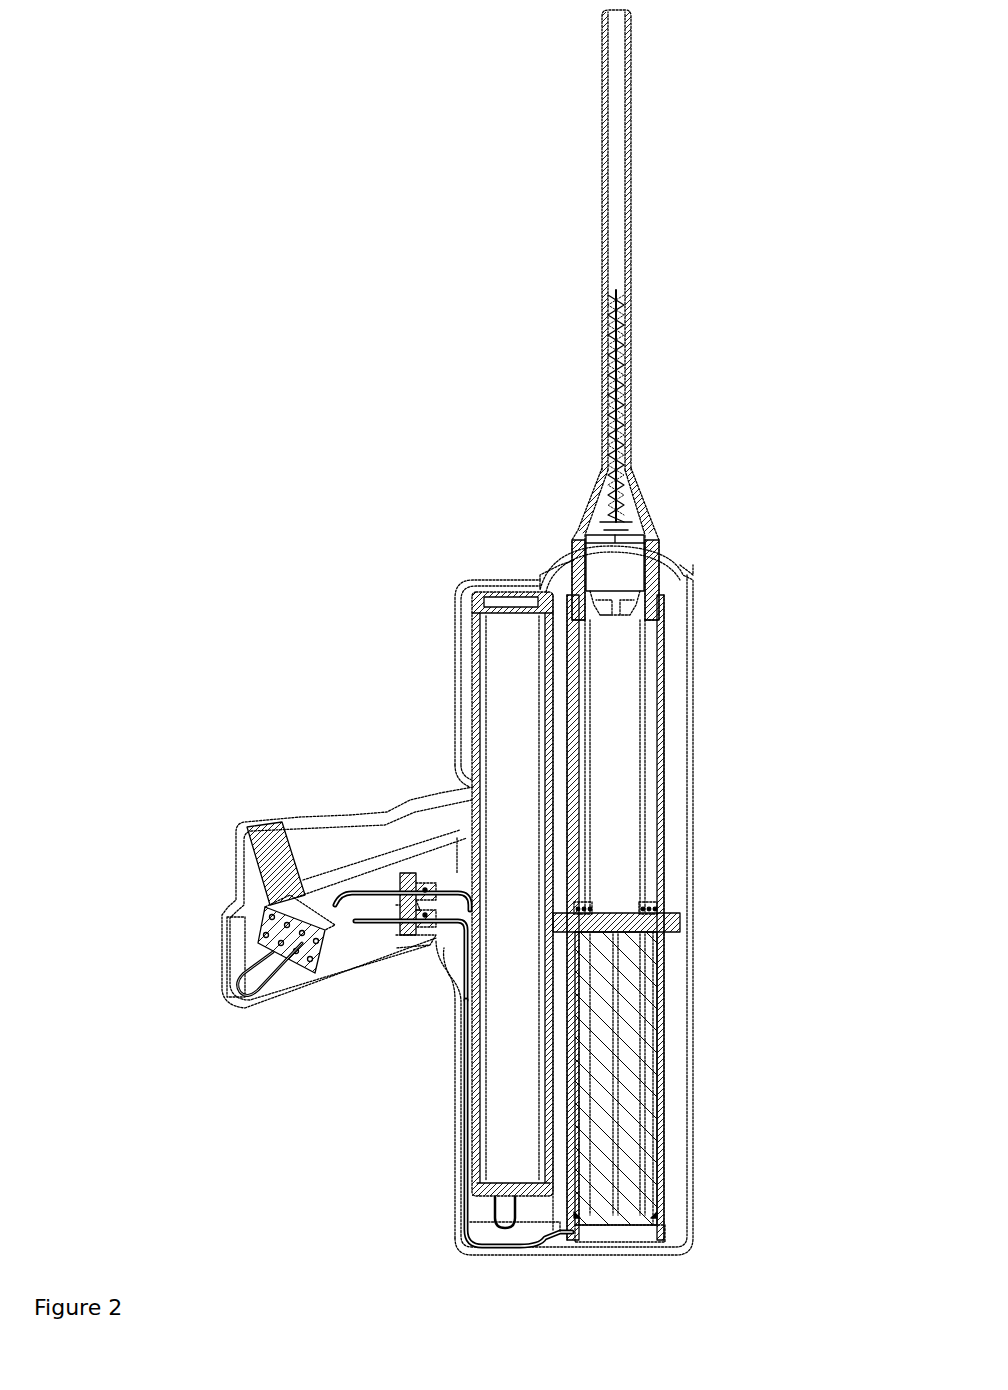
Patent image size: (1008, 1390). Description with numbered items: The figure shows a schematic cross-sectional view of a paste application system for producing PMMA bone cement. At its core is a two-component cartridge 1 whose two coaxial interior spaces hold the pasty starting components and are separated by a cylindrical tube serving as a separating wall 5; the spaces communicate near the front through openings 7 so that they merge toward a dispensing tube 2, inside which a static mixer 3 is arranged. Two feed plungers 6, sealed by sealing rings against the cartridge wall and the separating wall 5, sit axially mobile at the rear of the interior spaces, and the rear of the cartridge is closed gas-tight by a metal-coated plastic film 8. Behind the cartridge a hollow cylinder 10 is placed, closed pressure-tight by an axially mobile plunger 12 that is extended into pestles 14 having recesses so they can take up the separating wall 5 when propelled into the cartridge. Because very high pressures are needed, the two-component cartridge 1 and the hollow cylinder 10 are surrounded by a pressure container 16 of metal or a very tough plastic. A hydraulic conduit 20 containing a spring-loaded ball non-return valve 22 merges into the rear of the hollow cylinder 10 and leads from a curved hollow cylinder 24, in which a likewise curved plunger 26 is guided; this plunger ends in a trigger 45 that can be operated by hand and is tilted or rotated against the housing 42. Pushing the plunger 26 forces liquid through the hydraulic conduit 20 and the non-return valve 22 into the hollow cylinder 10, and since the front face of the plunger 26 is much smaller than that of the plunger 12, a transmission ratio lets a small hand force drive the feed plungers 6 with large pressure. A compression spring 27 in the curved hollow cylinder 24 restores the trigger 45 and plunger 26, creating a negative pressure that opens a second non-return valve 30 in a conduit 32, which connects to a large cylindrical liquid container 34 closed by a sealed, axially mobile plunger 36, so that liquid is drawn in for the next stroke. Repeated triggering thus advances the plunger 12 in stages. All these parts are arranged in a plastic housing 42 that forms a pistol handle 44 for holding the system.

The two-component cartridge 1 is at (658, 697).
The dispensing tube 2 is at (612, 172).
The static mixer 3 is at (620, 340).
The separating wall 5 is at (648, 765).
The feed plungers 6 is at (644, 906).
The openings 7 is at (640, 598).
The film 8 is at (593, 922).
The hollow cylinder 10 is at (660, 1058).
The plunger 12 is at (630, 1222).
The pestles 14 is at (630, 1140).
The pressure container 16 is at (663, 627).
The hydraulic conduit 20 is at (345, 903).
The non-return valve 22 is at (352, 812).
The curved hollow cylinder 24 is at (303, 943).
The plunger 26 is at (268, 850).
The compression spring 27 is at (297, 920).
The non-return valve 30 is at (404, 932).
The conduit 32 is at (340, 915).
The liquid container 34 is at (548, 1048).
The plunger 36 is at (518, 612).
The housing 42 is at (682, 556).
The pistol handle 44 is at (270, 953).
The trigger 45 is at (422, 888).